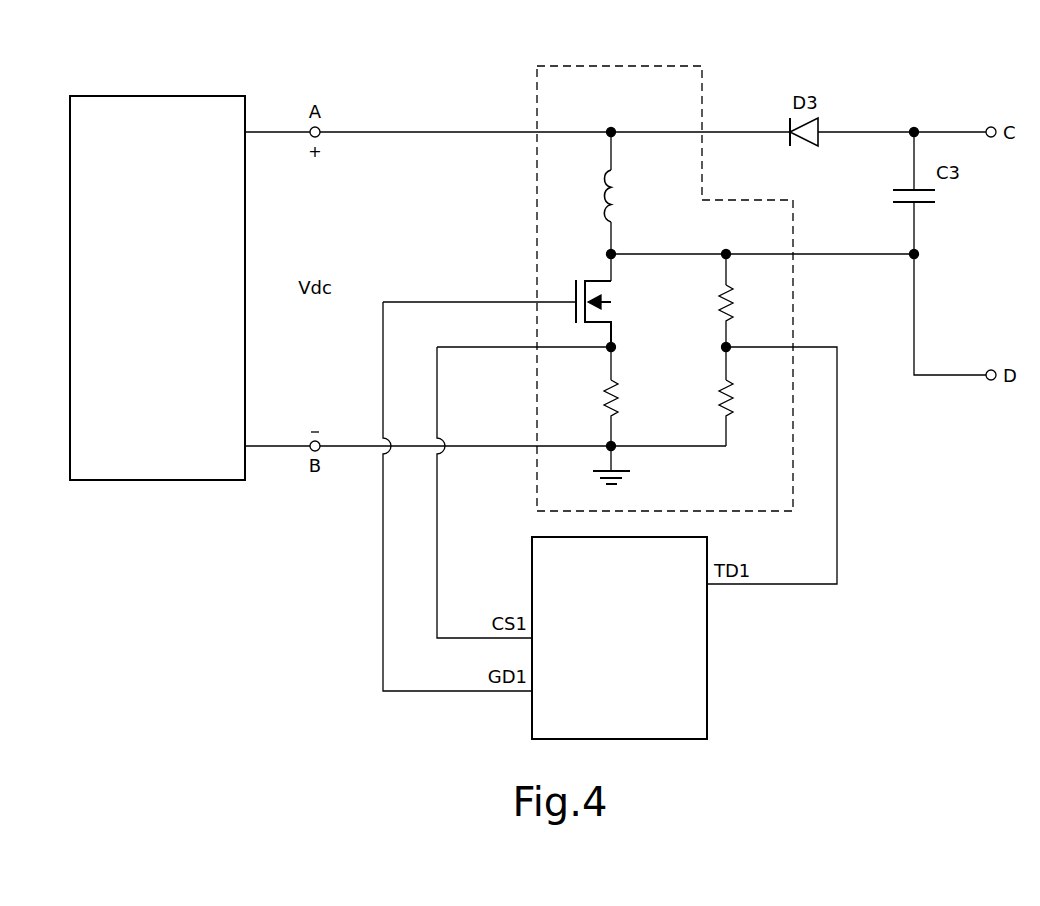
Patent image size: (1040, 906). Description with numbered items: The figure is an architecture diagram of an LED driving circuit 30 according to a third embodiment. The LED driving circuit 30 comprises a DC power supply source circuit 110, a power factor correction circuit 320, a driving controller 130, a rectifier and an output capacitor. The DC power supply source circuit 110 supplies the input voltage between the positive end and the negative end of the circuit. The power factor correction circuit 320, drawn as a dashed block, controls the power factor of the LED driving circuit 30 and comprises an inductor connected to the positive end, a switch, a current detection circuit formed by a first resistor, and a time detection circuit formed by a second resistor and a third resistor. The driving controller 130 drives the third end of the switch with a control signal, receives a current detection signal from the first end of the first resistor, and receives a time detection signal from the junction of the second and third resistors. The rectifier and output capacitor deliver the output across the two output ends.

The DC power supply source circuit 110 is at (138, 338).
The driving controller 130 is at (602, 680).
The power factor correction circuit 320 is at (645, 66).
The LED driving circuit 30 is at (957, 690).